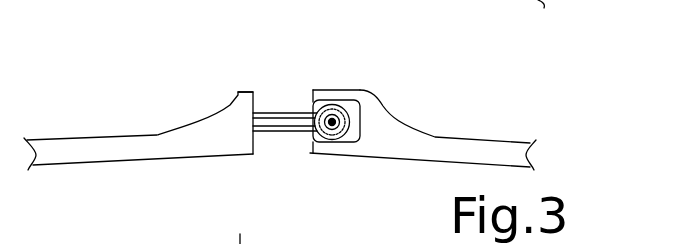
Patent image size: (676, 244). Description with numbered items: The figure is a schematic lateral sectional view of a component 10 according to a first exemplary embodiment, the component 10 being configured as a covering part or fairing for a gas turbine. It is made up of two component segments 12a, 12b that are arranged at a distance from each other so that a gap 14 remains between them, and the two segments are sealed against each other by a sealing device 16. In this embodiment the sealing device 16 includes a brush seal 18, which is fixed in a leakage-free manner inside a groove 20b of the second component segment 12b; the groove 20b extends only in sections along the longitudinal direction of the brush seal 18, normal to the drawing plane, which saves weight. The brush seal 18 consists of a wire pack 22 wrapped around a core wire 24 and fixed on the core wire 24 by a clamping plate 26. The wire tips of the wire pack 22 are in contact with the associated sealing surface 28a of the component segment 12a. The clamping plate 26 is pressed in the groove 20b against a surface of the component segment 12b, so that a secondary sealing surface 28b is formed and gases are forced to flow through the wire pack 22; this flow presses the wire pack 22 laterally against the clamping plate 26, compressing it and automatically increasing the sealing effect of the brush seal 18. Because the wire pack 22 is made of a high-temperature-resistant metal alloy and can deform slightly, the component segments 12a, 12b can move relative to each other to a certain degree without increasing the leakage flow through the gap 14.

The component 10 is at (93, 55).
The component segment 12a is at (153, 143).
The component segment 12b is at (466, 143).
The gap 14 is at (277, 58).
The sealing device 16 is at (392, 99).
The brush seal 18 is at (296, 143).
The groove 20b is at (317, 90).
The wire pack 22 is at (283, 133).
The core wire 24 is at (323, 143).
The clamping plate 26 is at (343, 143).
The sealing surface 28a is at (262, 100).
The secondary sealing surface 28b is at (314, 157).